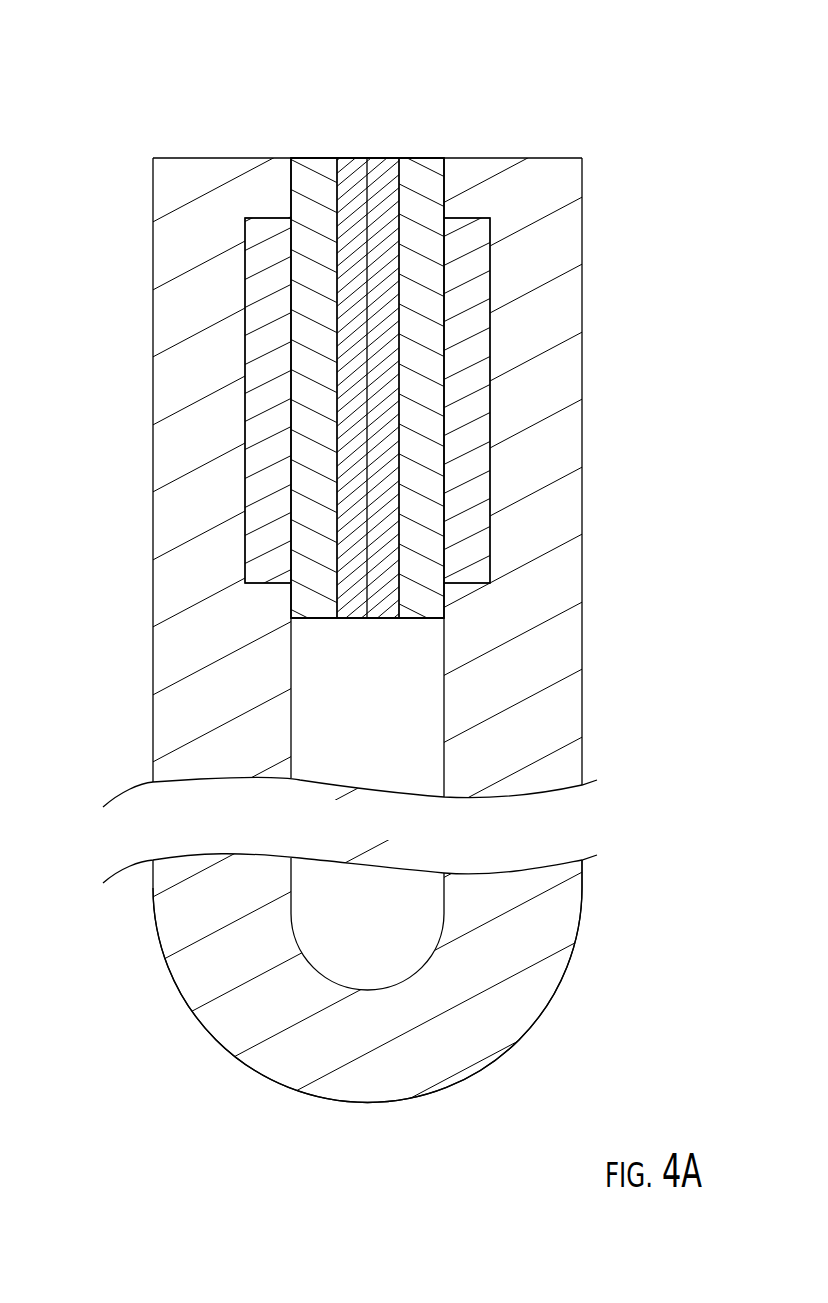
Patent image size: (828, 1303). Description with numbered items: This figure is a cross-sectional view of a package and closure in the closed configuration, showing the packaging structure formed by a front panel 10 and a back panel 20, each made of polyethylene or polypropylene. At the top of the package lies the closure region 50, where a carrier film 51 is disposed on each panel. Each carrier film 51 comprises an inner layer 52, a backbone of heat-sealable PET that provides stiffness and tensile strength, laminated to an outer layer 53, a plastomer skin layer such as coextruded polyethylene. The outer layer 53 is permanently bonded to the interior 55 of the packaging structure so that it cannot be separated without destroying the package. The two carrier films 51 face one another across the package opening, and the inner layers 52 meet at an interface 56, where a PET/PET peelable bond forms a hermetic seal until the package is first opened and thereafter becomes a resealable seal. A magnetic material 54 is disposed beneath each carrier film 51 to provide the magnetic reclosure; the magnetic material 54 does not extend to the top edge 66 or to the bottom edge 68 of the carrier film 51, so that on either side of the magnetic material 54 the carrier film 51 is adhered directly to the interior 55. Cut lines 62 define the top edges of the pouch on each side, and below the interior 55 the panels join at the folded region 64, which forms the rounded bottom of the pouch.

The front panel 10 is at (337, 631).
The back panel 20 is at (597, 523).
The closure region 50 is at (266, 388).
The carrier film 51 is at (366, 315).
The inner layer 52 is at (368, 387).
The outer layer 53 is at (378, 393).
The magnetic material 54 is at (426, 421).
The interior 55 is at (367, 804).
The interface 56 is at (520, 388).
The cut line 62 is at (344, 115).
The folded region 64 is at (367, 1040).
The top edge 66 is at (394, 103).
The bottom edge 68 is at (367, 659).